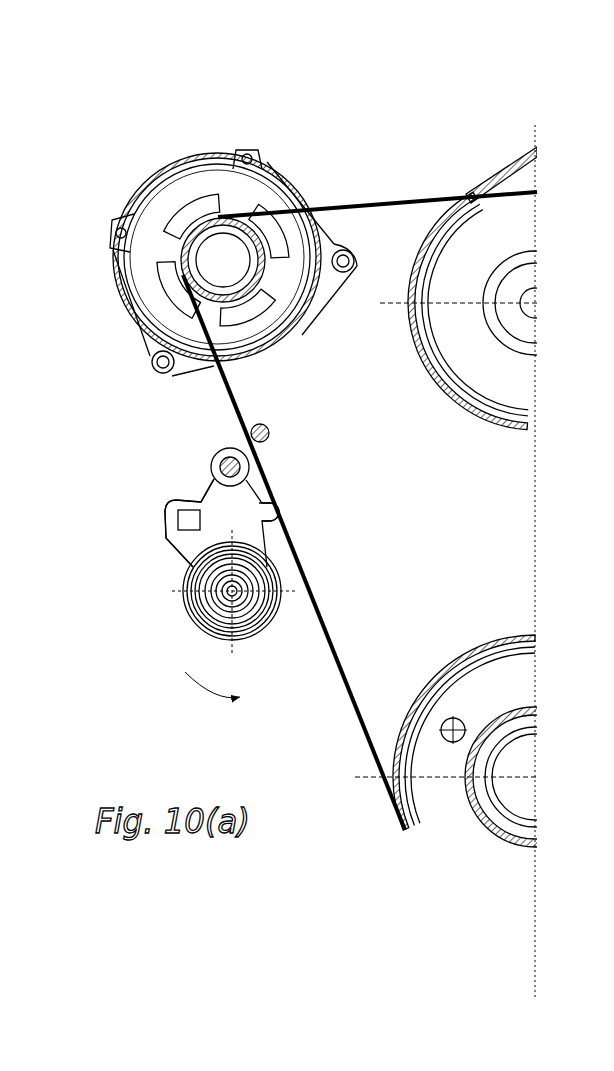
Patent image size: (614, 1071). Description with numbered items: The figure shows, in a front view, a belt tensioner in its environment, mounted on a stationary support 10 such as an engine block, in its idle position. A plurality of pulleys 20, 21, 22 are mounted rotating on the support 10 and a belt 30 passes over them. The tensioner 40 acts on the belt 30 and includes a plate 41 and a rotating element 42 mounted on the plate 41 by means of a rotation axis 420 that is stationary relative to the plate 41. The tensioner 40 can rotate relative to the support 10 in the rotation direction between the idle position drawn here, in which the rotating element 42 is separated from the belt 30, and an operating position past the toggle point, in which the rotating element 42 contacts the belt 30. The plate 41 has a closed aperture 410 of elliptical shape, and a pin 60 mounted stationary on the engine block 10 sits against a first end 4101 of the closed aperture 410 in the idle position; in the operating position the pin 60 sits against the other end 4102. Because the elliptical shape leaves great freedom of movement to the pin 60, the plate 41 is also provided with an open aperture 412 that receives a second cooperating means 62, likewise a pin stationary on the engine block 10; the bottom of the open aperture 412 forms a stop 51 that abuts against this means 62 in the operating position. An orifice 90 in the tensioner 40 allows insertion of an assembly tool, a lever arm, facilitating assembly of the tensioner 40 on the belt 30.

The stationary support 10 is at (457, 524).
The pulley 20 is at (167, 199).
The pulley 21 is at (450, 813).
The pulley 22 is at (498, 238).
The belt 30 is at (364, 202).
The tensioner 40 is at (164, 552).
The plate 41 is at (199, 498).
The rotating element 42 is at (254, 637).
The stop 51 is at (246, 515).
The pin 60 is at (230, 447).
The cooperating means 62 is at (268, 425).
The orifice 90 is at (184, 520).
The closed aperture 410 is at (211, 472).
The first end of the closed aperture 4101 is at (206, 452).
The other end of the closed aperture 4102 is at (228, 497).
The open aperture 412 is at (268, 503).
The rotation axis 420 is at (226, 600).